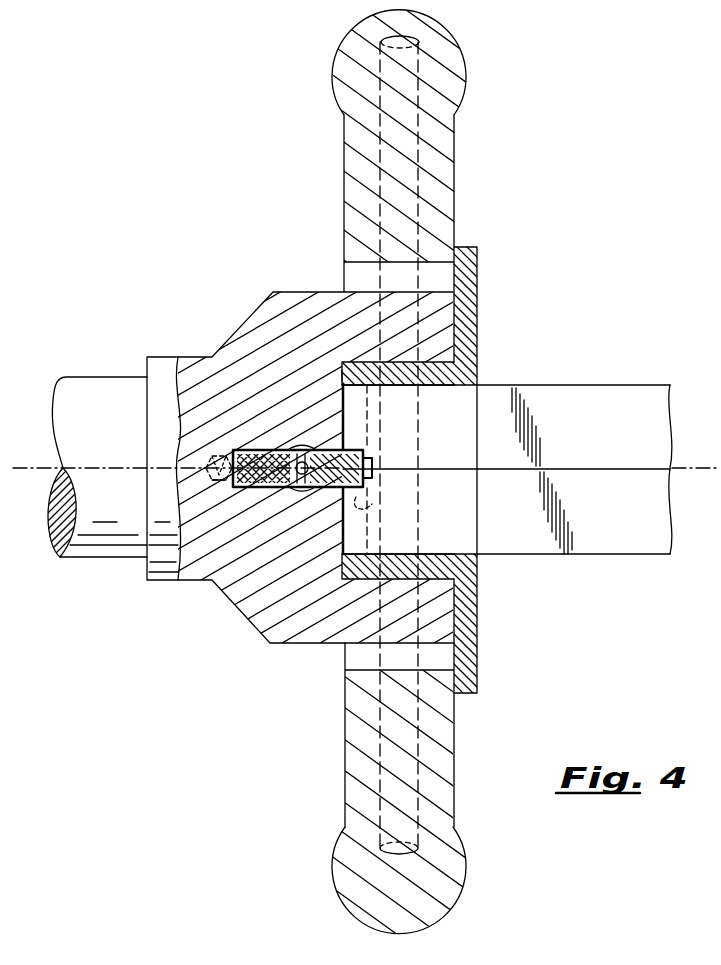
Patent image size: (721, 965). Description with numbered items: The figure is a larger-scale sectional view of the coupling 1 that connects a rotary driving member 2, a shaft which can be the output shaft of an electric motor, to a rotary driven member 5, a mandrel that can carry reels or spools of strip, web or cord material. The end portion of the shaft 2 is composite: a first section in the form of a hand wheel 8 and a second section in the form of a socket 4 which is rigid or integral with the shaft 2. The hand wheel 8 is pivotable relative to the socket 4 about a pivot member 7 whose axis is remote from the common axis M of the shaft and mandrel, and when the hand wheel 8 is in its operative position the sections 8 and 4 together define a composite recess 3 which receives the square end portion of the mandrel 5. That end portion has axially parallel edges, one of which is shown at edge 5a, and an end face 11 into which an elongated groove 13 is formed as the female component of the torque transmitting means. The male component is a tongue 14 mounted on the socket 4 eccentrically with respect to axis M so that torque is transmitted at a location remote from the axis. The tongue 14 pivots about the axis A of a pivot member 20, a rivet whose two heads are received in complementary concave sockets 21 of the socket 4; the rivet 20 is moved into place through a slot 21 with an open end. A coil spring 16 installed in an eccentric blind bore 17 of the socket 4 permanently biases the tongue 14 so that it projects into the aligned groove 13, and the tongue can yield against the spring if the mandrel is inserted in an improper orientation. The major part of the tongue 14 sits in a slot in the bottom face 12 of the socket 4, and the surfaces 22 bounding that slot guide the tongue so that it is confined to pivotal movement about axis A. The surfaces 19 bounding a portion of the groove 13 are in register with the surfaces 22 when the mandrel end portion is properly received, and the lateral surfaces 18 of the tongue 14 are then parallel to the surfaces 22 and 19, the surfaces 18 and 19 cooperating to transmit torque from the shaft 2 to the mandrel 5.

The coupling 1 is at (518, 238).
The rotary driving member 2 is at (97, 547).
The composite recess 3 is at (448, 547).
The socket 4 is at (332, 626).
The rotary driven member 5 is at (585, 408).
The edge 5a is at (592, 468).
The pivot member 7 is at (418, 727).
The hand wheel 8 is at (445, 125).
The end face 11 is at (342, 395).
The bottom face 12 is at (347, 422).
The groove 13 is at (366, 480).
The tongue 14 is at (370, 466).
The coil spring 16 is at (222, 453).
The blind bore 17 is at (215, 483).
The lateral surfaces 18 is at (326, 450).
The surfaces 19 is at (332, 488).
The pivot member 20 is at (302, 492).
The concave sockets 21 is at (290, 447).
The surfaces 22 is at (252, 487).
The axis A is at (302, 443).
The axis M is at (25, 466).